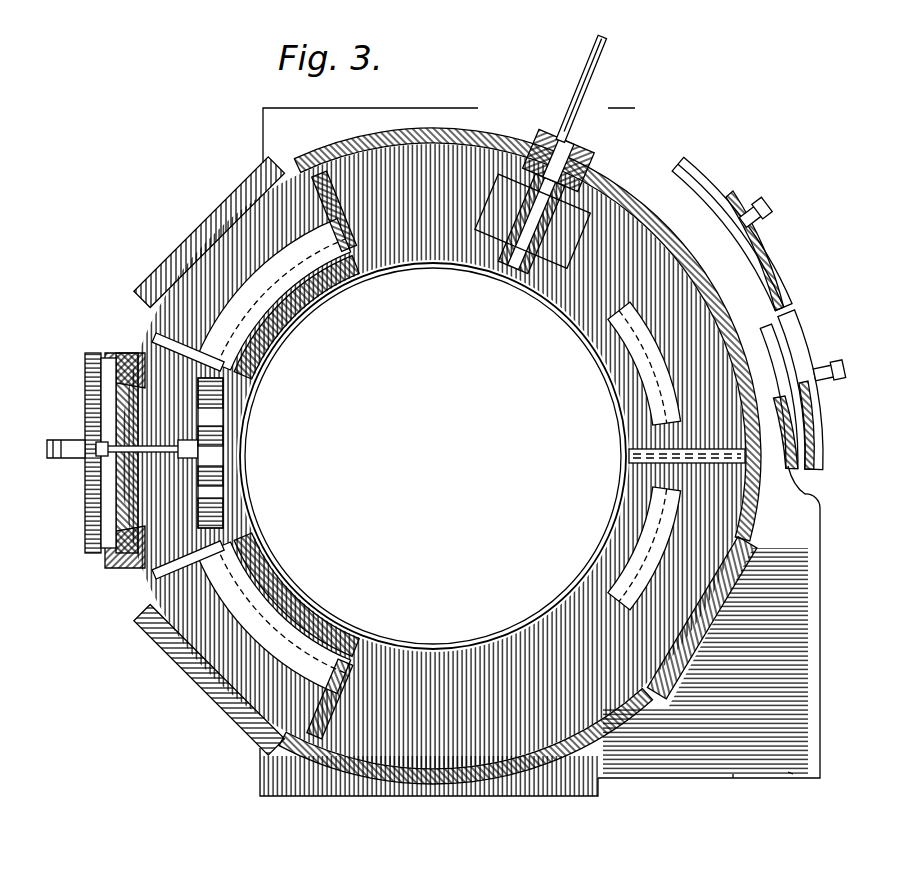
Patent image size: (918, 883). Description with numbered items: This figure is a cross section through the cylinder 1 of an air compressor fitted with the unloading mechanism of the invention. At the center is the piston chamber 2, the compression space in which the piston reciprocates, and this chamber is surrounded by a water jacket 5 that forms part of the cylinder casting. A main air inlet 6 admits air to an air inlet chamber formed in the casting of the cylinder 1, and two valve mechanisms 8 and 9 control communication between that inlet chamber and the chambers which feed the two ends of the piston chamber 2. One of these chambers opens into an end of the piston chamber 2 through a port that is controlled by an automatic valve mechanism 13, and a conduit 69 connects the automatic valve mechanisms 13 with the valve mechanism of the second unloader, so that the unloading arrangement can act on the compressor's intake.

The cylinder 1 is at (135, 433).
The piston chamber 2 is at (433, 456).
The water jacket 5 is at (278, 456).
The main air inlet 6 is at (709, 622).
The valve mechanism 8 is at (802, 390).
The valve mechanism 9 is at (732, 233).
The automatic valve mechanism 13 is at (540, 179).
The conduit 69 is at (579, 88).